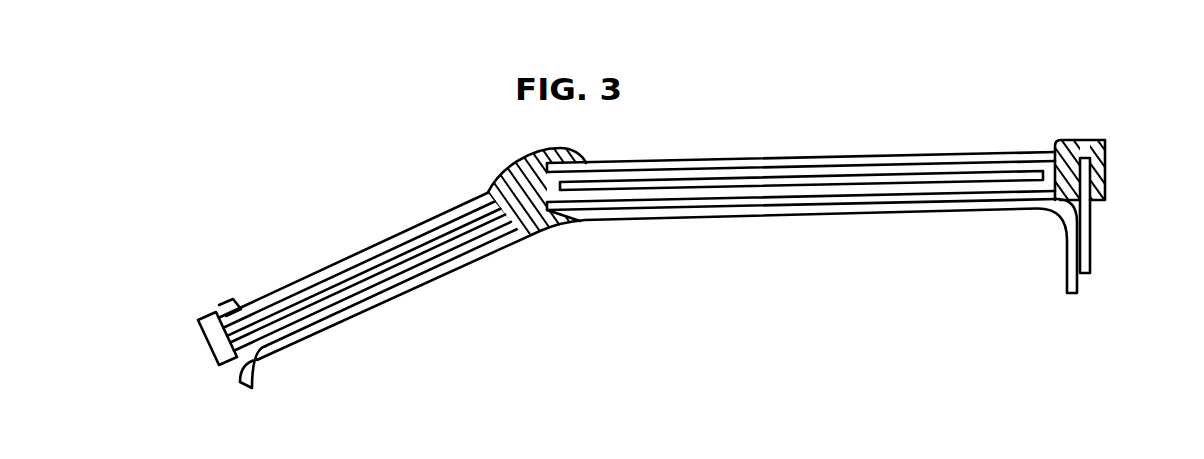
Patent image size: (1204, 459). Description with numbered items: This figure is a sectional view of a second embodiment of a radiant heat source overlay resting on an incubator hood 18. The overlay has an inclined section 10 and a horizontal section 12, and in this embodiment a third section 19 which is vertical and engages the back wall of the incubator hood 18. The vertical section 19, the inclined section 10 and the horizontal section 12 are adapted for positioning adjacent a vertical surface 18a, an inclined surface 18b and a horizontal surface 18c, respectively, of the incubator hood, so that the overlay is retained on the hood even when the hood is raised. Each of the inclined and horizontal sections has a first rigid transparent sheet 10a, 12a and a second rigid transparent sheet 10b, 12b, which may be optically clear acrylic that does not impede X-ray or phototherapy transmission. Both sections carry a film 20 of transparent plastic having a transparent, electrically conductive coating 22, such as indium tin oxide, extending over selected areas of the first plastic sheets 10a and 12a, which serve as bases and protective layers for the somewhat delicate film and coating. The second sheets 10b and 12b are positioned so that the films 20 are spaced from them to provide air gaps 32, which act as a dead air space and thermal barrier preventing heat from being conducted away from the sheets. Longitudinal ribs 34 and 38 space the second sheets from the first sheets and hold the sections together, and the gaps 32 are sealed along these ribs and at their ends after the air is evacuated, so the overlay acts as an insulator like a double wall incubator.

The inclined section 10 is at (627, 234).
The first rigid transparent sheet 10a is at (421, 258).
The second rigid transparent sheet 10b is at (313, 276).
The horizontal section 12 is at (802, 164).
The first rigid transparent sheet 12a is at (940, 195).
The second rigid transparent sheet 12b is at (876, 158).
The incubator hood 18 is at (712, 293).
The vertical surface 18a is at (1085, 286).
The inclined surface 18b is at (494, 247).
The horizontal surface 18c is at (725, 220).
The third section 19 is at (1092, 235).
The film 20 is at (345, 305).
The electrically conductive coating 22 is at (635, 271).
The air gaps 32 is at (444, 228).
The longitudinal rib 34 is at (214, 350).
The longitudinal rib 38 is at (1086, 140).